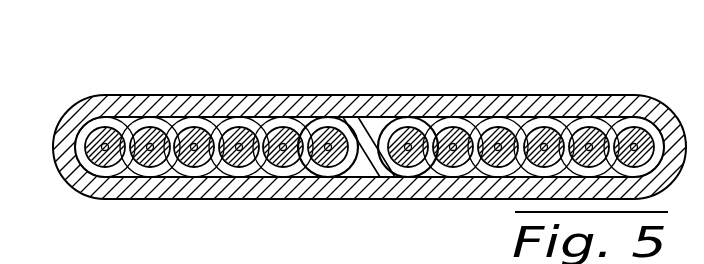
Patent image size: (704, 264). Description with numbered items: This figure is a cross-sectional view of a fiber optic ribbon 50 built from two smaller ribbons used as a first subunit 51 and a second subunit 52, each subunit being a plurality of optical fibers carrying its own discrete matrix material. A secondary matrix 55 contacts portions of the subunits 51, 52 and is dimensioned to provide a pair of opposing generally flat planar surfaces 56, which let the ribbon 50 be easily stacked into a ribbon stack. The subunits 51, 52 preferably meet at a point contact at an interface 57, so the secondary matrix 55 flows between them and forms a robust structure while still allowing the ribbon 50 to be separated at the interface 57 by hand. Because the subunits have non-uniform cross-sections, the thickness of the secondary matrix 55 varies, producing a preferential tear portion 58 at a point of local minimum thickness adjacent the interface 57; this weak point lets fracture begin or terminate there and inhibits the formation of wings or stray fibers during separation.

The ribbon 50 is at (60, 92).
The first subunit 51 is at (193, 125).
The second subunit 52 is at (534, 128).
The secondary matrix 55 is at (563, 97).
The generally flat planar surfaces 56 is at (268, 90).
The interface 57 is at (366, 125).
The preferential tear portion 58 is at (324, 105).